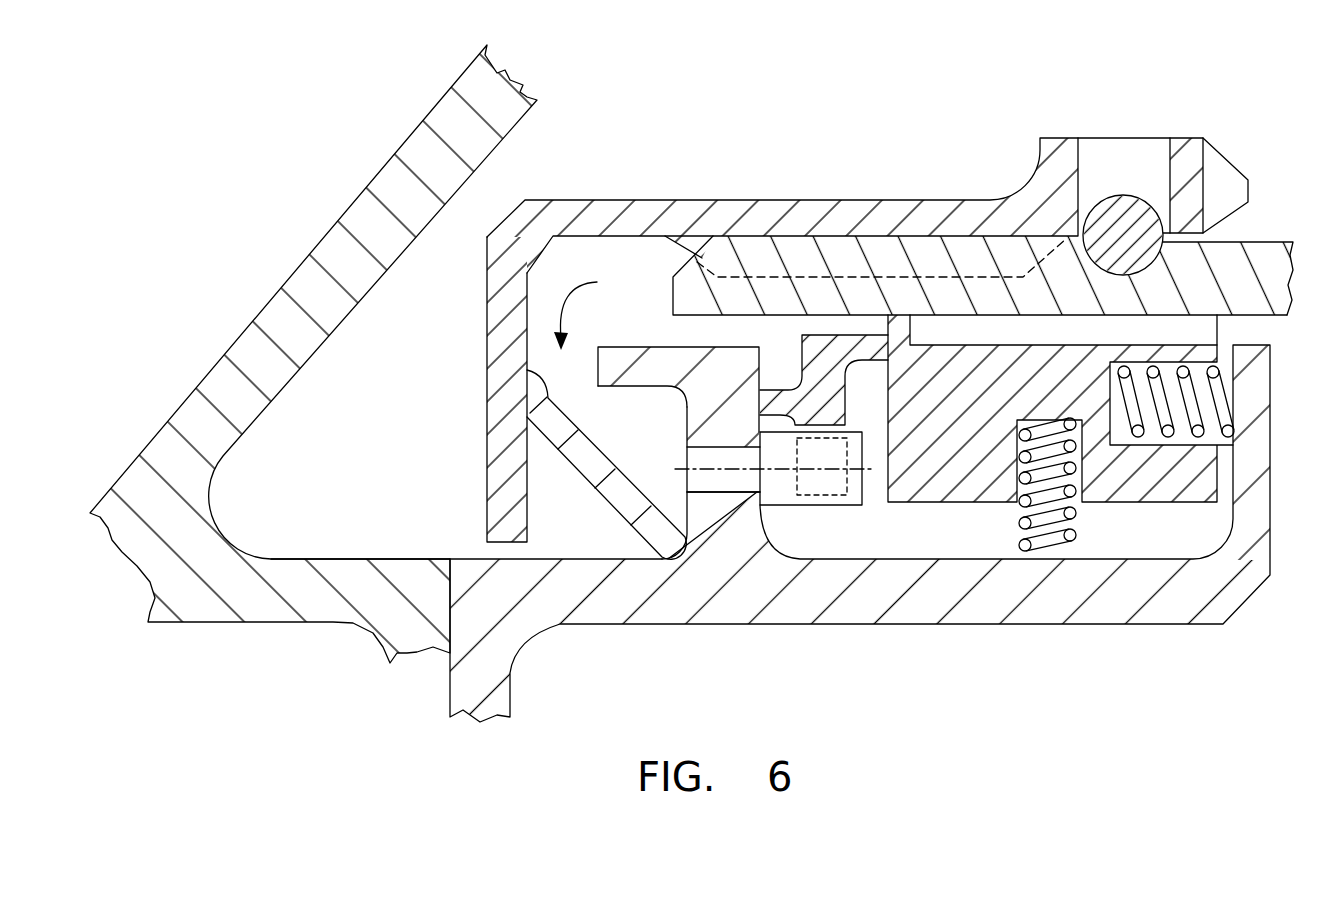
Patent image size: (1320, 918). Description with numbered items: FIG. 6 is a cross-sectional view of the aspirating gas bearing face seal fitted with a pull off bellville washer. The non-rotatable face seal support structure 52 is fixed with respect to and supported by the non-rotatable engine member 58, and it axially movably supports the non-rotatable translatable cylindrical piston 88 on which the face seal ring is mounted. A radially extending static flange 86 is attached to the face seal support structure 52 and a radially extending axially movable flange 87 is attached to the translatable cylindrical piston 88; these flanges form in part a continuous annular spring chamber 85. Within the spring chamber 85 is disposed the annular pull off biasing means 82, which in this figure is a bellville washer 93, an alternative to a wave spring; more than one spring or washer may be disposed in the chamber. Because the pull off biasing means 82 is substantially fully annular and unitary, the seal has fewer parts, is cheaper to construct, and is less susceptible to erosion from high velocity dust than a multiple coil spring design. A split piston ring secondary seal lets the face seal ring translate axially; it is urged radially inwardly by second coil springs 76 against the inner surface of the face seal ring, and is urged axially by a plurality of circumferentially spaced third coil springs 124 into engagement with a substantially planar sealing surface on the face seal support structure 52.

The face seal support structure 52 is at (770, 625).
The non-rotatable engine member structure 58 is at (324, 238).
The second coil springs 76 is at (1073, 530).
The annular pull off biasing means 82 is at (594, 307).
The spring chamber 85 is at (547, 393).
The static flange 86 is at (742, 504).
The axially movable flange 87 is at (487, 448).
The translatable cylindrical piston 88 is at (777, 198).
The bellville washer 93 is at (588, 484).
The third coil springs 124 is at (1157, 363).